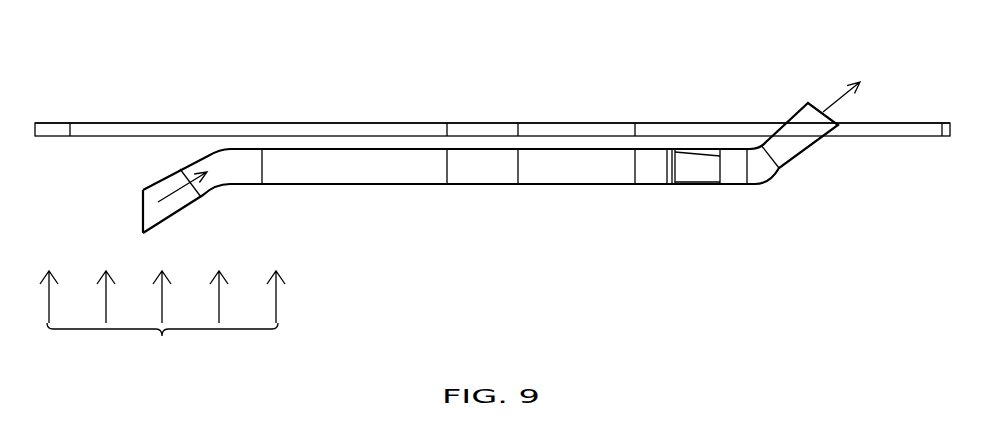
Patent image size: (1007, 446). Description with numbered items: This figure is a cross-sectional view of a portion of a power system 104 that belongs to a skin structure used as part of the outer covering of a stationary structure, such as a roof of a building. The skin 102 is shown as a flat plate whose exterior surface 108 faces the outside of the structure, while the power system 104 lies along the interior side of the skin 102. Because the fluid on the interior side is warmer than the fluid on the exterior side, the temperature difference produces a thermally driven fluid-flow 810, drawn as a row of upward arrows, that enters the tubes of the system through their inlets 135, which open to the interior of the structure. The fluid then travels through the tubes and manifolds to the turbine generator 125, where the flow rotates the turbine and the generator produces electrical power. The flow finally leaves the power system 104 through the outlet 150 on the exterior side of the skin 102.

The skin 102 is at (95, 137).
The exterior surface 108 is at (177, 122).
The power generation system 104 is at (562, 204).
The turbine generator 125 is at (703, 167).
The inlets 135 is at (143, 212).
The outlet 150 is at (822, 110).
The fluid-flow 810 is at (162, 320).